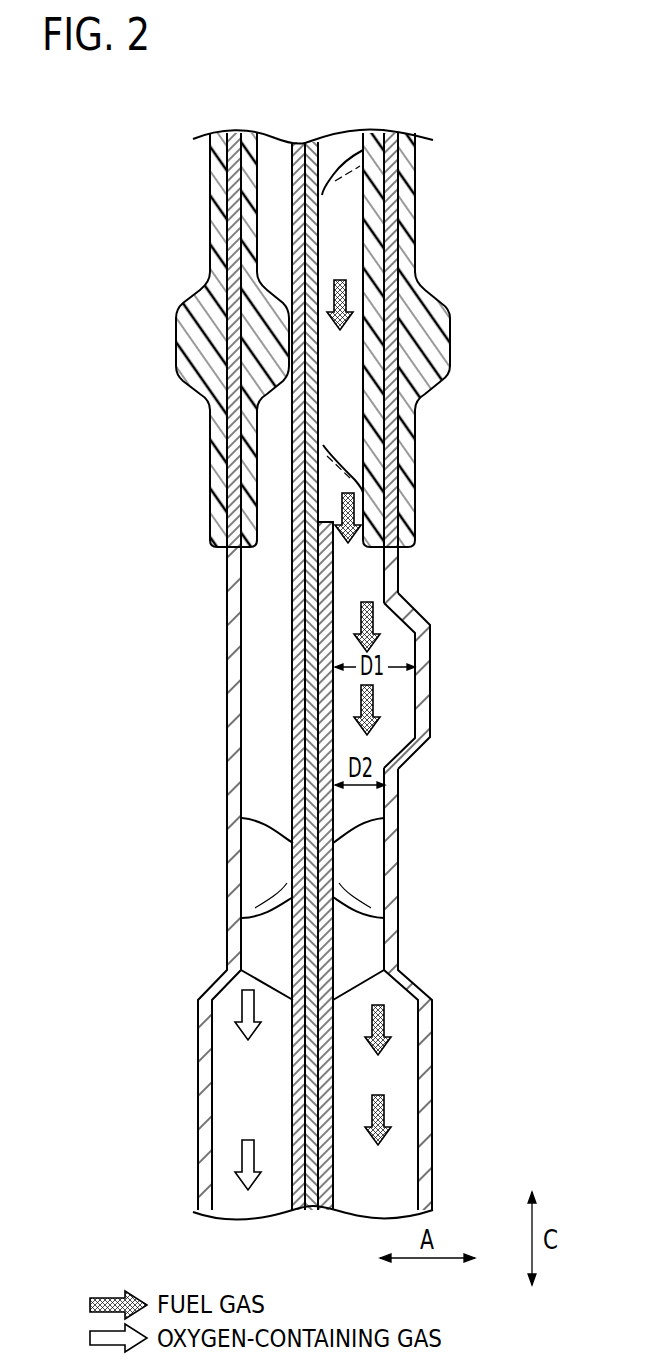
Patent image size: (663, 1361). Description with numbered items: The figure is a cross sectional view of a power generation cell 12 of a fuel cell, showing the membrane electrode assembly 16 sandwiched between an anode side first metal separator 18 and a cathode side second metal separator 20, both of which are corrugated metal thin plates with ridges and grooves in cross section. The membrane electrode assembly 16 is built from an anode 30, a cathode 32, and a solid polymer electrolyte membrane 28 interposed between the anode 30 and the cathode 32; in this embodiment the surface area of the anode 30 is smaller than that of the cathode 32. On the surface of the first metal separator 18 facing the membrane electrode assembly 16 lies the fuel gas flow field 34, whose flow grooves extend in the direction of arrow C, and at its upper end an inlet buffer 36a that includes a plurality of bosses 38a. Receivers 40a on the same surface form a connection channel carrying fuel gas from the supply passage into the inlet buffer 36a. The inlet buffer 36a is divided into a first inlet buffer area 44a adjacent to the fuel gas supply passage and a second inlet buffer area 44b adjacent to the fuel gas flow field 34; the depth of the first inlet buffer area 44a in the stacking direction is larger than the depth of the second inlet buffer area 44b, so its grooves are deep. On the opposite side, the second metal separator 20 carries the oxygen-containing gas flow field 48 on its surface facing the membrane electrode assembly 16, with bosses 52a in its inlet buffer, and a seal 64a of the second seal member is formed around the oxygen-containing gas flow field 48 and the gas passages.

The power generation cell 12 is at (426, 51).
The membrane electrode assembly 16 is at (307, 137).
The anode side first metal separator 18 is at (386, 128).
The cathode side second metal separator 20 is at (233, 128).
The solid polymer electrolyte membrane 28 is at (313, 1133).
The anode 30 is at (328, 1170).
The cathode 32 is at (300, 1078).
The fuel gas flow field 34 is at (378, 1065).
The inlet buffer 36a is at (503, 697).
The bosses 38a is at (360, 865).
The receivers 40a is at (340, 253).
The first inlet buffer area 44a is at (390, 698).
The second inlet buffer area 44b is at (377, 798).
The oxygen-containing gas flow field 48 is at (253, 1060).
The bosses 52a is at (267, 865).
The seal 64a is at (277, 337).